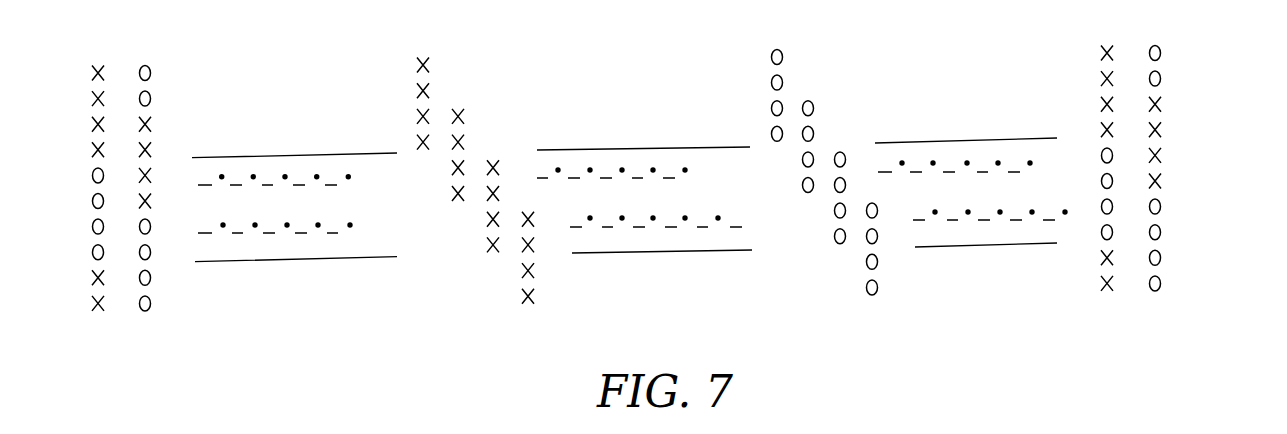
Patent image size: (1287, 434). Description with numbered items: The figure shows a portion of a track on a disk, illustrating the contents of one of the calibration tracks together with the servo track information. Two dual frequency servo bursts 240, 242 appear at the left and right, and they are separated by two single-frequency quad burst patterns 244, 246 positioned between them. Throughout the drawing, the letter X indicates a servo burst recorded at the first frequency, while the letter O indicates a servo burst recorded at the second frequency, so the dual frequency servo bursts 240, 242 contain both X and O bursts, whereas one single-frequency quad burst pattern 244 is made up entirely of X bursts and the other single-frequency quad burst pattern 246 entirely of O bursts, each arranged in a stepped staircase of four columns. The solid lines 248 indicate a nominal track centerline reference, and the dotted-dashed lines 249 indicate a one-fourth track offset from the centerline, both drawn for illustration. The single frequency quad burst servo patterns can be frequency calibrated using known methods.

The dual frequency servo burst 240 is at (167, 334).
The dual frequency servo burst 242 is at (1180, 313).
The single-frequency quad burst pattern 244 is at (552, 324).
The single-frequency quad burst pattern 246 is at (902, 318).
The solid lines 248 is at (315, 150).
The dotted-dashed lines 249 is at (255, 225).